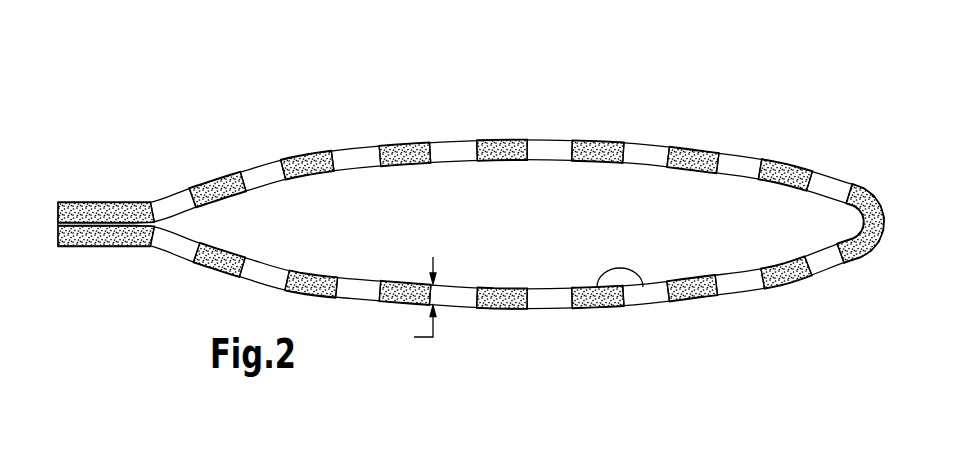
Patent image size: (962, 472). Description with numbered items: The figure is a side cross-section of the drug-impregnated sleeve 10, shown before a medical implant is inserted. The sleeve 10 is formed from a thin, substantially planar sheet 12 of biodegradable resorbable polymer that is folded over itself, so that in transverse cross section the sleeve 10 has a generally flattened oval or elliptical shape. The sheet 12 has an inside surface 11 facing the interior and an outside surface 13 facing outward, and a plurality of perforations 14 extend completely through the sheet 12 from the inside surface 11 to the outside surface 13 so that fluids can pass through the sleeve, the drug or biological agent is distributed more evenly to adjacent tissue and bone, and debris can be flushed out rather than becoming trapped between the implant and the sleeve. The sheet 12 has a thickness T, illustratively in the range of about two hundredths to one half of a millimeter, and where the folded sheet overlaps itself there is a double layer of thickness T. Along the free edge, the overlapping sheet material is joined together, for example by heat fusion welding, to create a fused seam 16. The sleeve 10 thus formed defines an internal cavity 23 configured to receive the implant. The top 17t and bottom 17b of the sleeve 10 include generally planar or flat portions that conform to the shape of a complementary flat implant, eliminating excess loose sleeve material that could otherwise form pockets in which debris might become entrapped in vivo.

The drug-impregnated sleeve 10 is at (823, 128).
The inside surface 11 is at (510, 168).
The sheet 12 is at (305, 153).
The outside surface 13 is at (680, 143).
The perforations 14 is at (548, 148).
The fused seam 16 is at (92, 233).
The top of sleeve 17t is at (445, 128).
The bottom of sleeve 17b is at (520, 320).
The internal cavity 23 is at (643, 287).
The sheet thickness T is at (416, 303).